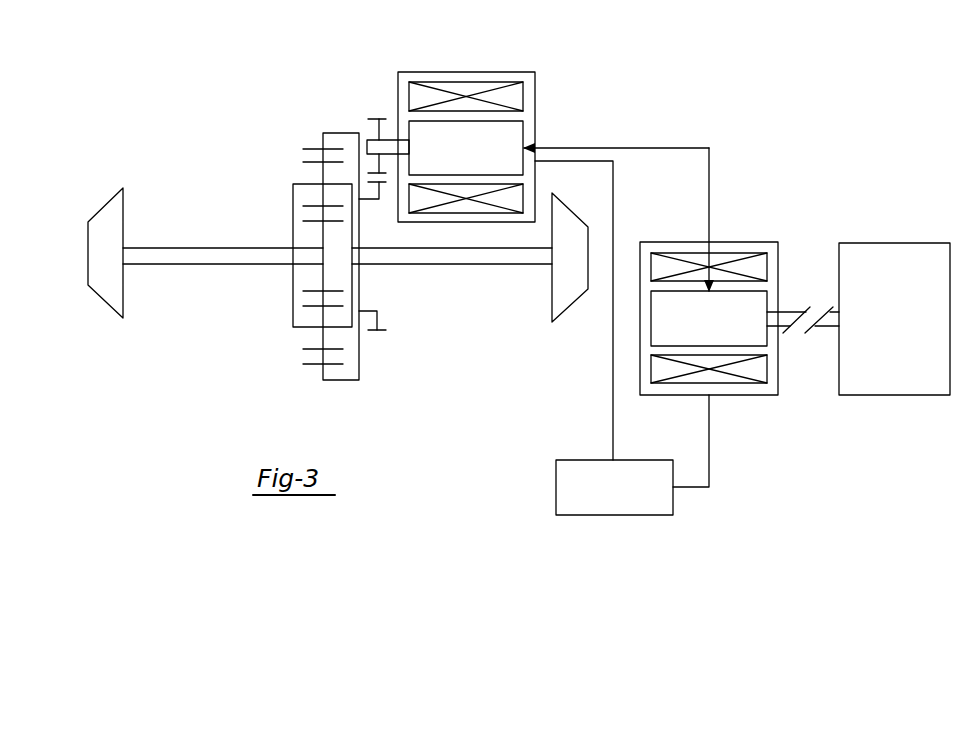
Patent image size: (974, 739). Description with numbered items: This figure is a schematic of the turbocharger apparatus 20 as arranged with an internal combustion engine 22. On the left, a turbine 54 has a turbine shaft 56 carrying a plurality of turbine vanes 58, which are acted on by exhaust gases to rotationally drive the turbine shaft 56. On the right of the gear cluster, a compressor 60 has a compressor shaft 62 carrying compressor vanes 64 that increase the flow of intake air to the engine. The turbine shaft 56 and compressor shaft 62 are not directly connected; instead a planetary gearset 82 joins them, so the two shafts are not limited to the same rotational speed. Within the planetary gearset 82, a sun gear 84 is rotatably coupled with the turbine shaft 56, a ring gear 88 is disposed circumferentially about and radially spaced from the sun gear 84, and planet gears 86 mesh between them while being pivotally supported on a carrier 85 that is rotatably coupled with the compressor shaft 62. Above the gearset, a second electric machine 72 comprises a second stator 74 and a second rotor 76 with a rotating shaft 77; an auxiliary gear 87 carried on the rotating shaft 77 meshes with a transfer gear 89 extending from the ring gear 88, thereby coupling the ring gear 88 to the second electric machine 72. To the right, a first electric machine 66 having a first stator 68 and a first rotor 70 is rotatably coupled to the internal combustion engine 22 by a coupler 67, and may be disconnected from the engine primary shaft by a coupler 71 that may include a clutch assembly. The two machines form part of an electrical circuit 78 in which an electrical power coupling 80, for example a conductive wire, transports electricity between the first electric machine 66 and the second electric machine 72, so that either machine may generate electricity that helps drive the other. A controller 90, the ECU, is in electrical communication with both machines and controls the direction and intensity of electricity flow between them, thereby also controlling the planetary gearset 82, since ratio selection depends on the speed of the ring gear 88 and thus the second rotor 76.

The turbocharger apparatus 20 is at (249, 113).
The internal combustion engine 22 is at (926, 225).
The turbine 54 is at (157, 330).
The turbine shaft 56 is at (190, 247).
The turbine vanes 58 is at (107, 205).
The compressor 60 is at (548, 332).
The compressor shaft 62 is at (452, 265).
The compressor vanes 64 is at (573, 214).
The first electric machine 66 is at (750, 408).
The coupler 67 is at (790, 212).
The first stator 68 is at (745, 253).
The first rotor 70 is at (778, 298).
The coupler 71 is at (808, 343).
The second electric machine 72 is at (550, 67).
The second stator 74 is at (430, 82).
The second rotor 76 is at (535, 128).
The rotating shaft 77 is at (393, 144).
The electrical circuit 78 is at (710, 117).
The electrical power coupling 80 is at (655, 148).
The planetary gearset 82 is at (363, 392).
The sun gear 84 is at (322, 235).
The carrier 85 is at (293, 296).
The planet gears 86 is at (322, 175).
The auxiliary gear 87 is at (378, 128).
The ring gear 88 is at (342, 133).
The transfer gear 89 is at (379, 199).
The controller 90 is at (572, 460).